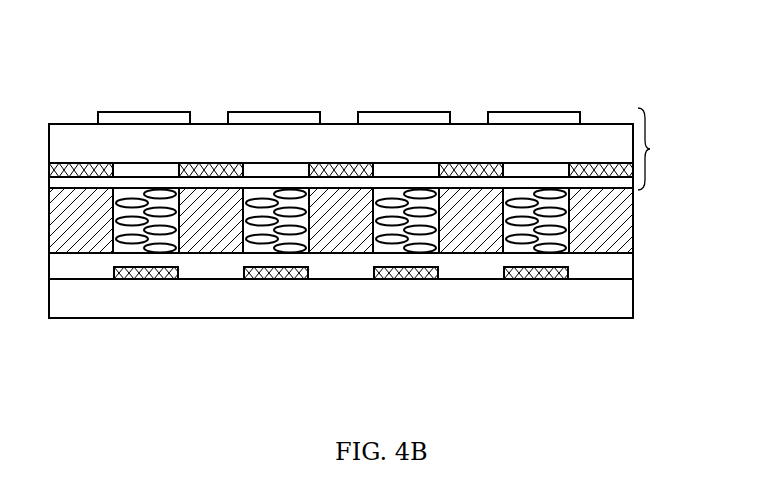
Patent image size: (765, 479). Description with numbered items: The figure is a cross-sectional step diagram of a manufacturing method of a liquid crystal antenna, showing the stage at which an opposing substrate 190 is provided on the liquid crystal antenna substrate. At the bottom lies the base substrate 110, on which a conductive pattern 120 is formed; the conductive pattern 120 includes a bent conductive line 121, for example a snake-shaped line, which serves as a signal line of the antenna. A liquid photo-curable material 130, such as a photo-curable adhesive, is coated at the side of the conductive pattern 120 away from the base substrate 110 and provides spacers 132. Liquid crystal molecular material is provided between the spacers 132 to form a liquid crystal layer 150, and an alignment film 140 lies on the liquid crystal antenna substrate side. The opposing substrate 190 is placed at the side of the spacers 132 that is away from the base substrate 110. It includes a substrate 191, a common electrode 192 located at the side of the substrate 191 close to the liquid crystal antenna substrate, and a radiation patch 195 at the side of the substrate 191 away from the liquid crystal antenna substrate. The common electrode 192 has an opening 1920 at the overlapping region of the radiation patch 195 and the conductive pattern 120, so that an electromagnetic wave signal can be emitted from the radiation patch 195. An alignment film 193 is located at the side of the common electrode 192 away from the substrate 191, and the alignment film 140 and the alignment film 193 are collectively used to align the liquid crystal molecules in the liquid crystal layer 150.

The base substrate 110 is at (512, 303).
The conductive pattern 120 is at (341, 325).
The bent conductive line 121 is at (282, 279).
The liquid photo-curable material 130 is at (341, 161).
The spacers 132 is at (347, 210).
The alignment film 140 is at (79, 265).
The liquid crystal layer 150 is at (153, 213).
The opposing substrate 190 is at (660, 149).
The substrate 191 is at (62, 150).
The common electrode 192 is at (257, 168).
The opening 1920 is at (557, 170).
The alignment film 193 is at (477, 183).
The radiation patch 195 is at (147, 118).